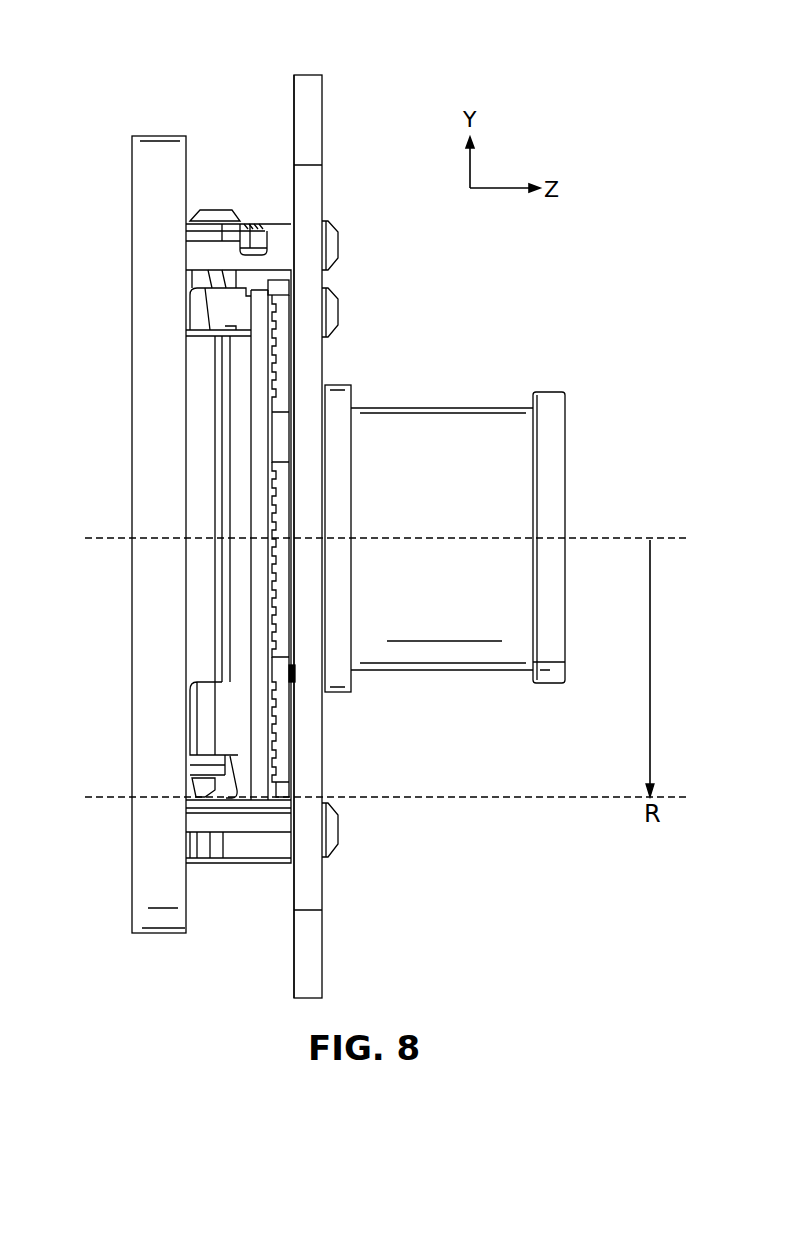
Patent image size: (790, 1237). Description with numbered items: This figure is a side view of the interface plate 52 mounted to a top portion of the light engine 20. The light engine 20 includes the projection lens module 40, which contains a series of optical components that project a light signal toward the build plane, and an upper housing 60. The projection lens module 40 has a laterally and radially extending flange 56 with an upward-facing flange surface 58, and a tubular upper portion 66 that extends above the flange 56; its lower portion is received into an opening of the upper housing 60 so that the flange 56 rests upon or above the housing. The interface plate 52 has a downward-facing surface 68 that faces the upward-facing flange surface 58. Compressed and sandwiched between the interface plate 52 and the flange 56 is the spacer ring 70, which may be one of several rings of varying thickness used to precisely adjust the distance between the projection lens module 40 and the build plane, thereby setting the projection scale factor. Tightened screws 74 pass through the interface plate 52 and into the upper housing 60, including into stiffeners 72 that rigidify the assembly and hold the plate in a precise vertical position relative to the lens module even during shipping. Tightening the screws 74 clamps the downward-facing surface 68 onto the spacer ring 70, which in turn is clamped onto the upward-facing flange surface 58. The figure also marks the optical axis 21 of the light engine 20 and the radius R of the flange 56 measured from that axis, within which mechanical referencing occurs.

The light engine 20 is at (155, 712).
The optical axis 21 is at (610, 538).
The projection lens module 40 is at (502, 423).
The interface plate 52 is at (312, 118).
The flange 56 is at (280, 328).
The upward-facing flange surface 58 is at (291, 358).
The upper housing 60 is at (205, 403).
The tubular upper portion 66 is at (450, 628).
The downward-facing surface 68 is at (294, 127).
The spacer ring 70 is at (293, 718).
The stiffeners 72 is at (202, 255).
The screws 74 is at (332, 247).